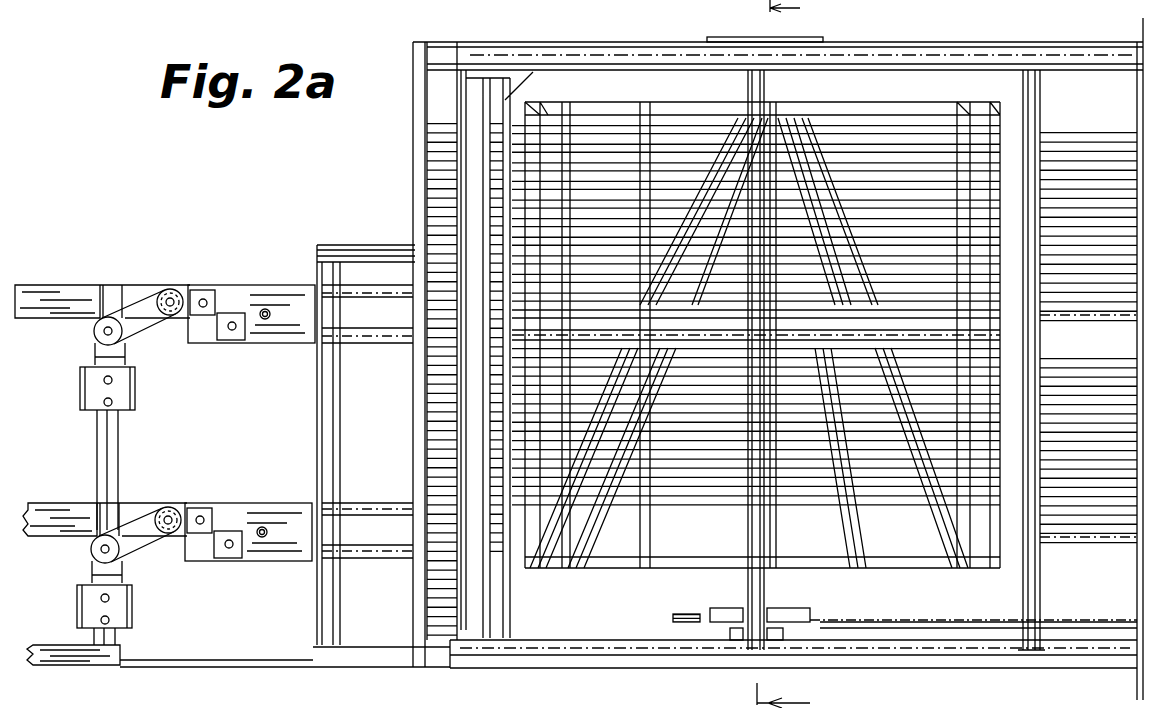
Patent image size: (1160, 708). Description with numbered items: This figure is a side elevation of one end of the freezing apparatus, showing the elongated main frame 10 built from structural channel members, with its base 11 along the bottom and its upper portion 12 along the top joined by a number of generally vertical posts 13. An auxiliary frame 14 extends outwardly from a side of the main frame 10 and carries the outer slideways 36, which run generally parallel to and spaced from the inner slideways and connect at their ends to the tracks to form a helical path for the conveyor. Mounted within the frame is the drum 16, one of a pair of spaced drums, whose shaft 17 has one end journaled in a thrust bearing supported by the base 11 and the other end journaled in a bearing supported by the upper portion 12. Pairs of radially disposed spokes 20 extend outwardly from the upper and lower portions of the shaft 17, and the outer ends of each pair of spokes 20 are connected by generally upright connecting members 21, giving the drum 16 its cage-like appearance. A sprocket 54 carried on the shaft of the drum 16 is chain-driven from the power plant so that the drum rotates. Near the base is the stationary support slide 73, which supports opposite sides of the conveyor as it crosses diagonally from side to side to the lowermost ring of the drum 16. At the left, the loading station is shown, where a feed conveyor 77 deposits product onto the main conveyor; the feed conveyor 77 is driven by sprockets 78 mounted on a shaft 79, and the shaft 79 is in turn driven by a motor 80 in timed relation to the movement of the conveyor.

The main frame 10 is at (943, 40).
The base 11 is at (606, 666).
The upper portion 12 is at (616, 43).
The vertical posts 13 is at (465, 183).
The auxiliary frame 14 is at (1024, 664).
The drum 16 is at (840, 102).
The shaft 17 is at (766, 574).
The radially disposed spokes 20 is at (655, 112).
The upright connecting members 21 is at (922, 120).
The outer slideways 36 is at (1120, 152).
The sprocket 54 is at (690, 612).
The stationary support slide 73 is at (1086, 318).
The feed conveyor 77 is at (62, 278).
The sprockets 78 is at (167, 336).
The shaft 79 is at (173, 294).
The motor 80 is at (95, 333).